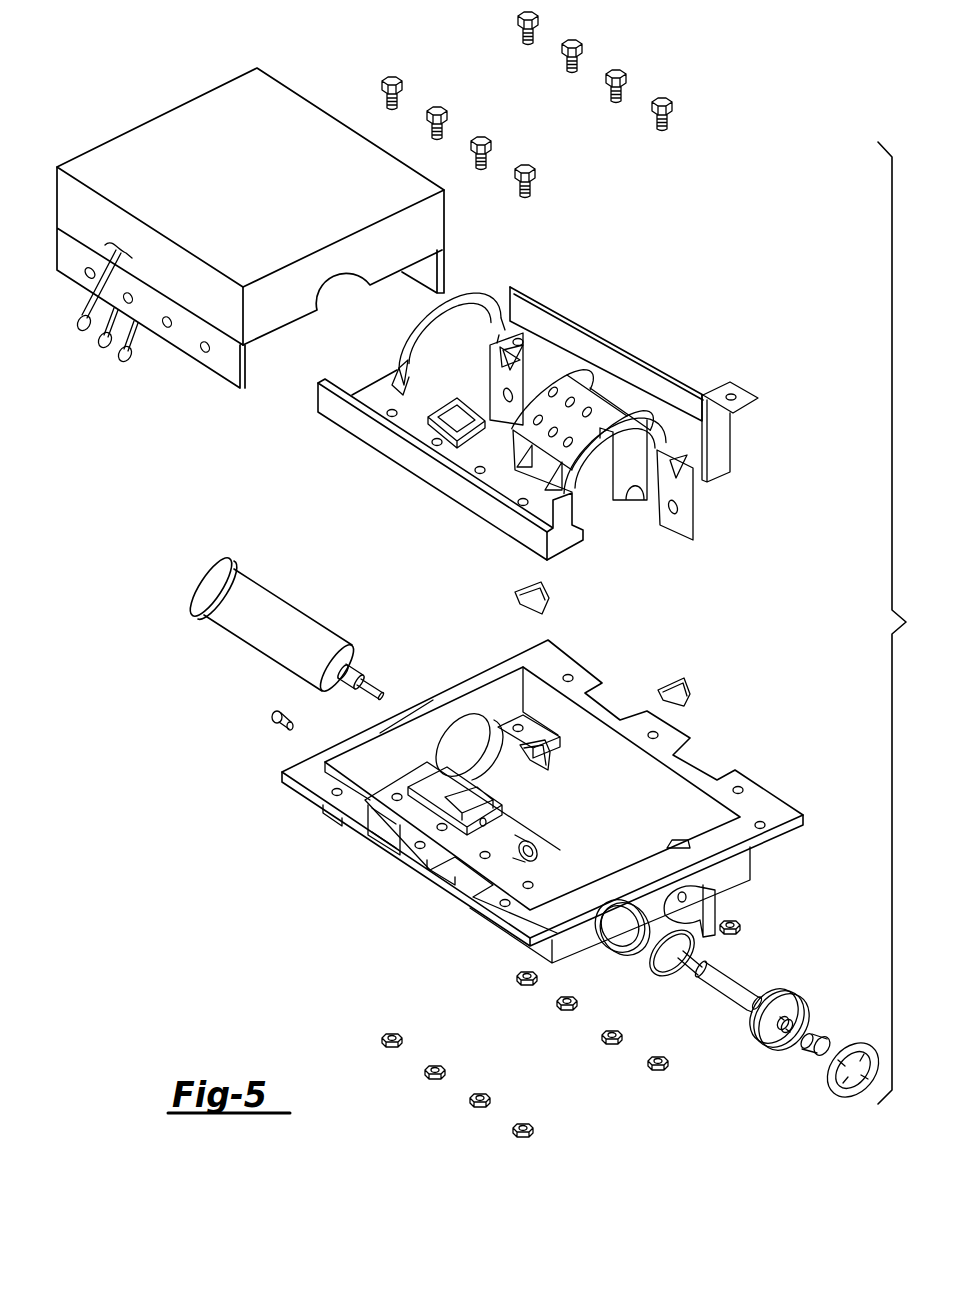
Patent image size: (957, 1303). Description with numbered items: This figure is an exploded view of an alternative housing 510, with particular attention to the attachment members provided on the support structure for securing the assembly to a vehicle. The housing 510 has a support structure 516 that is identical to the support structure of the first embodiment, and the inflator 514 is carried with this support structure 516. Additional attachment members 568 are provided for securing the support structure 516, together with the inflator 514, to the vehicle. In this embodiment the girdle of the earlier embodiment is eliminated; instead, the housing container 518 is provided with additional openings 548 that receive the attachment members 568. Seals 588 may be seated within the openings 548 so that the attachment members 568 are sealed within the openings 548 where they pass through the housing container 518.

The housing 510 is at (235, 773).
The inflator 514 is at (283, 618).
The support structure 516 is at (370, 433).
The housing container 518 is at (470, 902).
The openings 548 is at (540, 755).
The attachment members 568 is at (500, 377).
The seals 588 is at (662, 685).